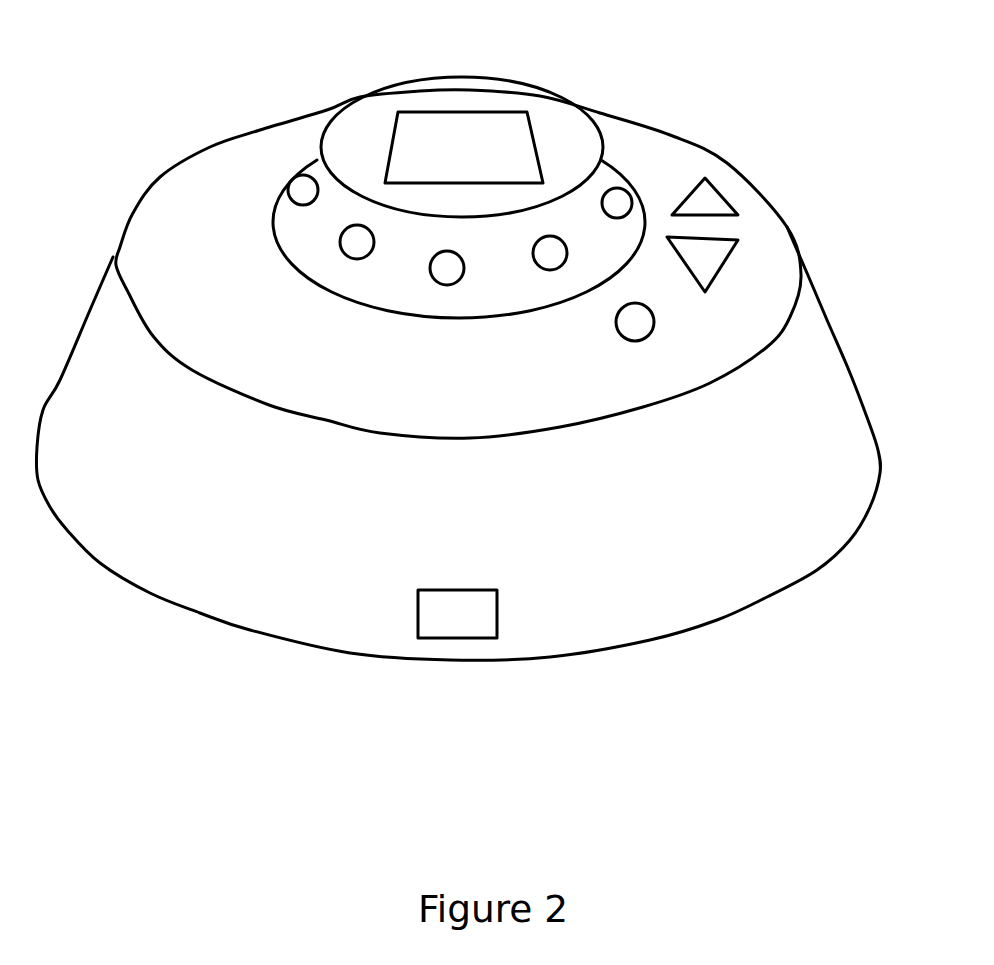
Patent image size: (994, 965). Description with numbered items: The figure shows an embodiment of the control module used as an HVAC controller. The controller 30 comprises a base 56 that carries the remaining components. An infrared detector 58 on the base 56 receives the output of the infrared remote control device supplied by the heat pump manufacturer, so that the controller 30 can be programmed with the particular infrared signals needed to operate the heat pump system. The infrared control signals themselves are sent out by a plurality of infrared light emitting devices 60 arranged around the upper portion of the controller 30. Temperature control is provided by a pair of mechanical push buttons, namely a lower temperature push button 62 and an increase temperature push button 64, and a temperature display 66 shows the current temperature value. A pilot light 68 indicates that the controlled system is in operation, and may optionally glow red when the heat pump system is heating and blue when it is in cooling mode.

The controller 30 is at (473, 406).
The base 56 is at (258, 608).
The infrared detector 58 is at (447, 610).
The infrared light emitting devices 60 is at (360, 250).
The lower temperature push button 62 is at (733, 250).
The increase temperature push button 64 is at (715, 207).
The temperature display 66 is at (450, 126).
The pilot light 68 is at (645, 338).